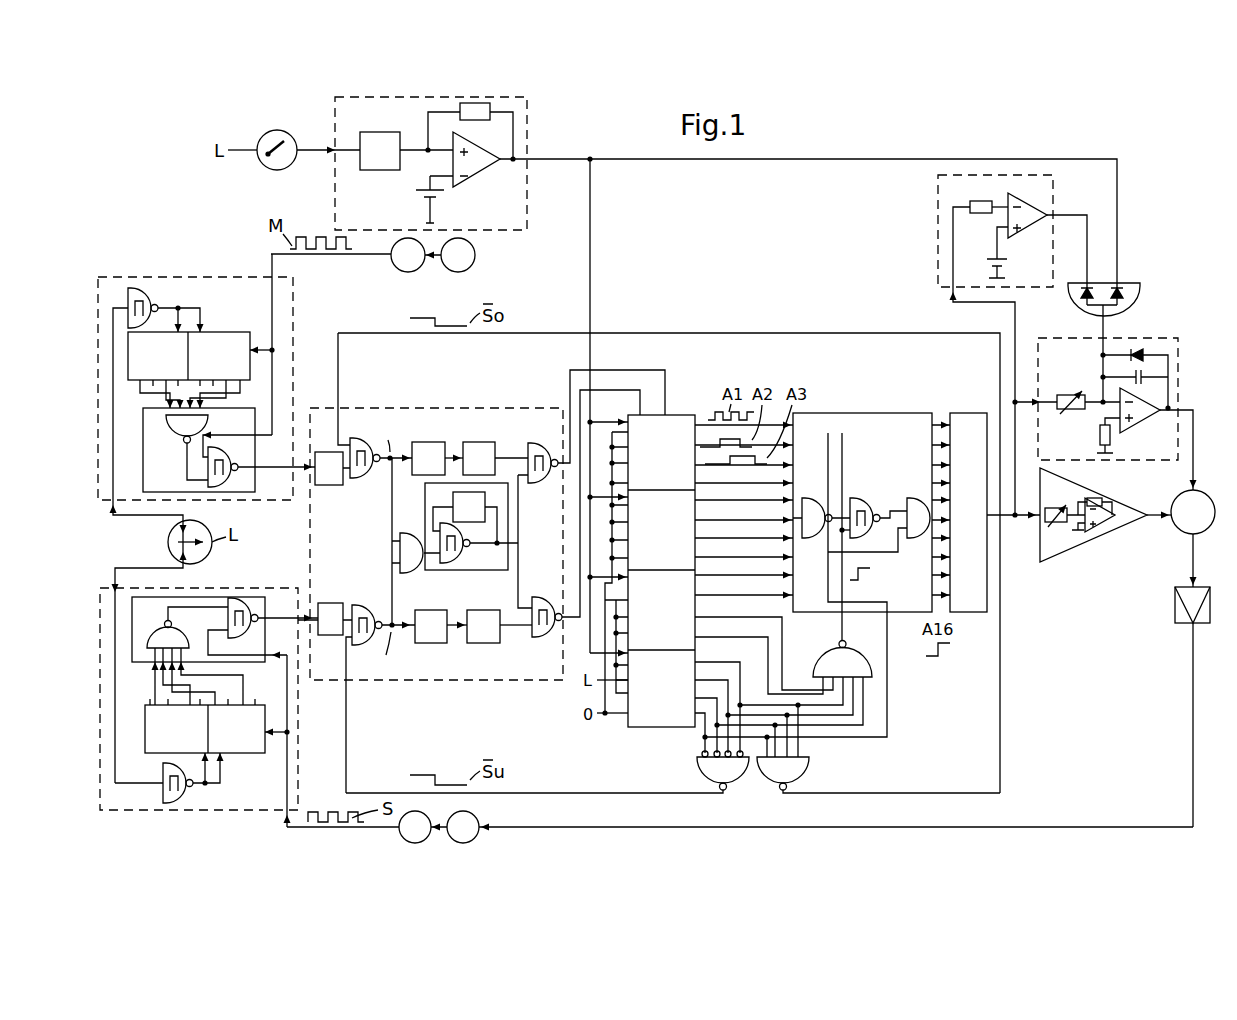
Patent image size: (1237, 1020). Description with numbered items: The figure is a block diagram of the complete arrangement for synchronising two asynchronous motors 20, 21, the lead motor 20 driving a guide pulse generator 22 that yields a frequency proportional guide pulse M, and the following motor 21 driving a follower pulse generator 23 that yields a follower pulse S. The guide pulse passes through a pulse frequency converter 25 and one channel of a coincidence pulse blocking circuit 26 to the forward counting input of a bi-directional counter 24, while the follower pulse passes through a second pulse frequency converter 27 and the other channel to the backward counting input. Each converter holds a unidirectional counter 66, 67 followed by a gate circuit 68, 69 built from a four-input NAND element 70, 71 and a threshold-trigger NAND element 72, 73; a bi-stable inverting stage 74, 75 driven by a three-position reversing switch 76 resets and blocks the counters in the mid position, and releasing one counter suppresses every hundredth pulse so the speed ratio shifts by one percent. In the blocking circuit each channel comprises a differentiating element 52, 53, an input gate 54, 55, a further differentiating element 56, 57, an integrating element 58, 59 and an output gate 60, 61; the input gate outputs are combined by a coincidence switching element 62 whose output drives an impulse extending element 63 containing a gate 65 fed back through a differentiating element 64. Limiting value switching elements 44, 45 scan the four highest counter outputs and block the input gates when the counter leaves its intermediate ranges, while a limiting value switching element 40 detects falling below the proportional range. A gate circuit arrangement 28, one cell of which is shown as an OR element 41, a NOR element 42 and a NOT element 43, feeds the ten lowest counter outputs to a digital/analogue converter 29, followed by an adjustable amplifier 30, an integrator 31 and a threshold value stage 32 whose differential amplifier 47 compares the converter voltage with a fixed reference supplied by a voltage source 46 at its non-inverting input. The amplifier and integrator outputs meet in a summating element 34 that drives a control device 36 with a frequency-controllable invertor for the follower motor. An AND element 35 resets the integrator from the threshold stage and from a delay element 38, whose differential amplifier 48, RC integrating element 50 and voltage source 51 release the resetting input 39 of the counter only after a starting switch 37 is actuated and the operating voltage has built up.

The lead motor 20 is at (473, 262).
The following motor 21 is at (465, 811).
The guide pulse generator 22 is at (401, 262).
The follower pulse generator 23 is at (408, 812).
The bi-directional counter 24 is at (646, 730).
The pulse frequency converter 25 is at (296, 316).
The coincidence pulse blocking circuit 26 is at (450, 408).
The second pulse frequency converter 27 is at (298, 755).
The gate circuit arrangement 28 is at (870, 413).
The digital/analogue converter 29 is at (958, 413).
The amplifier 30 is at (1070, 555).
The integrator 31 is at (1157, 338).
The threshold value stage 32 is at (938, 214).
The summating element 34 is at (1178, 530).
The AND element 35 is at (1137, 285).
The control device 36 is at (1175, 621).
The starting switch 37 is at (283, 131).
The delay element 38 is at (527, 130).
The resetting input 39 is at (600, 412).
The limiting value switching element 40 is at (820, 652).
The OR element 41 is at (914, 498).
The NOR element 42 is at (865, 498).
The NOT element 43 is at (808, 498).
The further limiting value switching element 44 is at (810, 775).
The third limiting value switching element 45 is at (697, 775).
The voltage source 46 is at (987, 257).
The differential amplifier 47 is at (1027, 203).
The differential amplifier 48 is at (492, 170).
The RC integrating element 50 is at (380, 132).
The voltage source 51 is at (444, 200).
The differentiating element 52 is at (330, 488).
The differentiating element 53 is at (330, 603).
The input gate 54 is at (368, 482).
The input gate 55 is at (366, 605).
The differentiating element 56 is at (427, 442).
The differentiating element 57 is at (430, 643).
The integrating element 58 is at (481, 442).
The integrating element 59 is at (490, 643).
The output gate 60 is at (538, 443).
The output gate 61 is at (550, 640).
The coincidence switching element 62 is at (411, 533).
The impulse extending element 63 is at (493, 571).
The differentiating element 64 is at (453, 497).
The gate 65 is at (471, 547).
The unidirectional counter 66 is at (233, 332).
The unidirectional counter 67 is at (249, 757).
The gate circuit 68 is at (253, 410).
The gate circuit 69 is at (257, 666).
The NAND element 70 is at (172, 430).
The NAND element 71 is at (165, 621).
The NAND element 72 is at (230, 460).
The NAND element 73 is at (243, 630).
The bi-stable inverting stage 74 is at (151, 295).
The bi-stable inverting stage 75 is at (160, 778).
The three-position reversing switch 76 is at (168, 540).